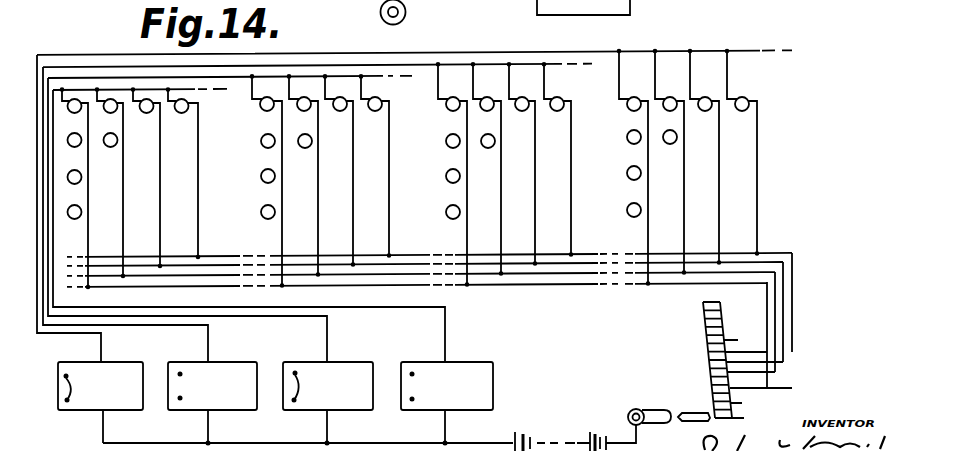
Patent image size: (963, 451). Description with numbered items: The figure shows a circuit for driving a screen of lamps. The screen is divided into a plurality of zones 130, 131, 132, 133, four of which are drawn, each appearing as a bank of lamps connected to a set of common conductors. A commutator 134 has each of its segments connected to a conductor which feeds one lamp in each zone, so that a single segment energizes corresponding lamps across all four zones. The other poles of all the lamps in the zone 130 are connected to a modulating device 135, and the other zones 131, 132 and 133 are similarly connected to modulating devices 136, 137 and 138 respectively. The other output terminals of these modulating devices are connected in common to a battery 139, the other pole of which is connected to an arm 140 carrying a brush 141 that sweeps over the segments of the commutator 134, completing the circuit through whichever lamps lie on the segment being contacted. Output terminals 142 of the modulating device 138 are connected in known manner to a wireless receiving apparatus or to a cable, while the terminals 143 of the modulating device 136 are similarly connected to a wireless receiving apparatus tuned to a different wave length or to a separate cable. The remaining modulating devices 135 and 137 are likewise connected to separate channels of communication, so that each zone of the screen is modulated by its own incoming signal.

The zone 130 is at (130, 188).
The zone 131 is at (321, 181).
The zone 132 is at (505, 174).
The zone 133 is at (688, 167).
The commutator 134 is at (740, 330).
The modulating device 135 is at (507, 343).
The modulating device 136 is at (377, 349).
The modulating device 137 is at (262, 349).
The modulating device 138 is at (148, 358).
The battery 139 is at (560, 437).
The arm 140 is at (680, 413).
The brush 141 is at (707, 412).
The output terminals 142 is at (76, 350).
The terminals 143 is at (304, 350).